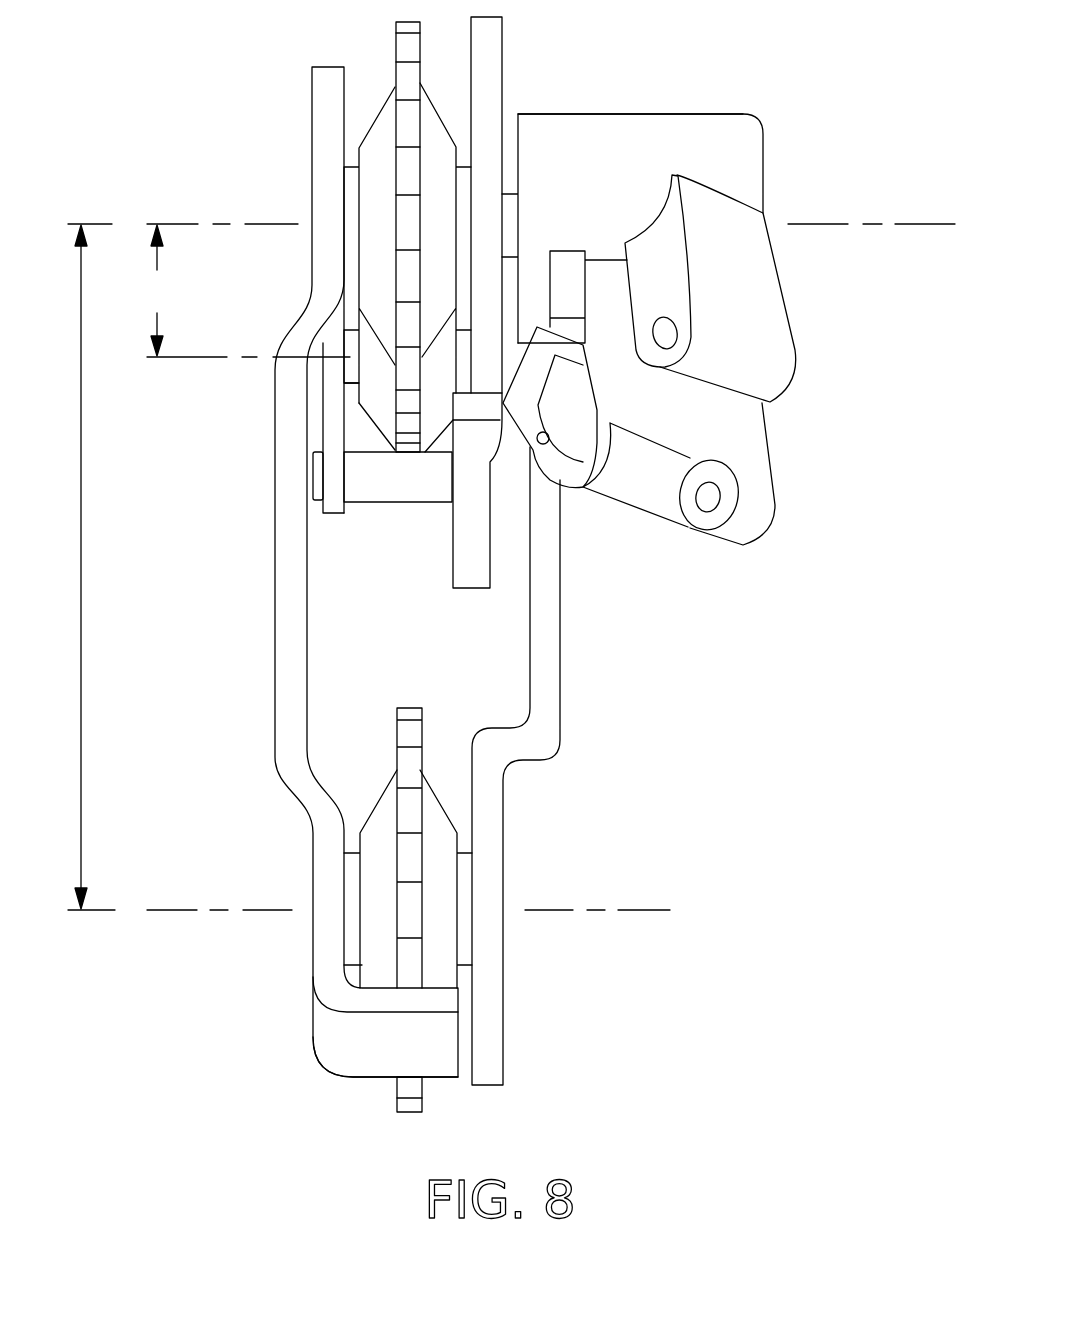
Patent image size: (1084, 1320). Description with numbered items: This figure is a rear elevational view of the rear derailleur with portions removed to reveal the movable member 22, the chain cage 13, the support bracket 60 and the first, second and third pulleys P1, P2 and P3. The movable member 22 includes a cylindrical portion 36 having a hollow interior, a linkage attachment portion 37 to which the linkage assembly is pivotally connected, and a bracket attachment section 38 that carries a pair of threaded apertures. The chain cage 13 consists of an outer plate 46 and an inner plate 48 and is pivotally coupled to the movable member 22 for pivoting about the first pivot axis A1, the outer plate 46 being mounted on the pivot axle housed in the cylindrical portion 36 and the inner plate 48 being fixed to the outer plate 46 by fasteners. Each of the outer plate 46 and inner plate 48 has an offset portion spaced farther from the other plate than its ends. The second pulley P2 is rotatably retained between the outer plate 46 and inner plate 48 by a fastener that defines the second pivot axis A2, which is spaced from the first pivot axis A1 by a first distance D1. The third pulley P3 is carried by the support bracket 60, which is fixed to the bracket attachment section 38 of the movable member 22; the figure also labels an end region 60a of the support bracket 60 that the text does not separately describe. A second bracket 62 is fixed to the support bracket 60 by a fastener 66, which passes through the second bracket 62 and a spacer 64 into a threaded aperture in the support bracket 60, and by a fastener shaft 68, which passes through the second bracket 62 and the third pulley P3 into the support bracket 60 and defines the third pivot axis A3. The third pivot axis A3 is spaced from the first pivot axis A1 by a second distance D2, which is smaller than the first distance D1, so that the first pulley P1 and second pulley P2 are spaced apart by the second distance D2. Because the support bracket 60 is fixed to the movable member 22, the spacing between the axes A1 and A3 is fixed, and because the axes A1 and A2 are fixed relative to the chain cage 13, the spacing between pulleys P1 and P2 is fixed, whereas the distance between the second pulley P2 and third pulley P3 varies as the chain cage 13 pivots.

The chain cage 13 is at (248, 1023).
The movable member 22 is at (620, 100).
The cylindrical portion 36 is at (710, 138).
The linkage attachment portion 37 is at (793, 318).
The bracket attachment section 38 is at (585, 303).
The outer plate 46 is at (578, 682).
The inner plate 48 is at (262, 617).
The support bracket 60 is at (473, 567).
The lever end portion 60a is at (565, 267).
The second bracket 62 is at (332, 513).
The spacer 64 is at (393, 480).
The fastener 66 is at (313, 478).
The fastener shaft 68 is at (350, 367).
The first pulley P1 is at (385, 132).
The second pulley P2 is at (433, 818).
The third pulley P3 is at (380, 408).
The first pivot axis A1 is at (915, 224).
The second pivot axis A2 is at (177, 910).
The third pivot axis A3 is at (212, 357).
The first distance D1 is at (84, 567).
The second distance D2 is at (157, 290).